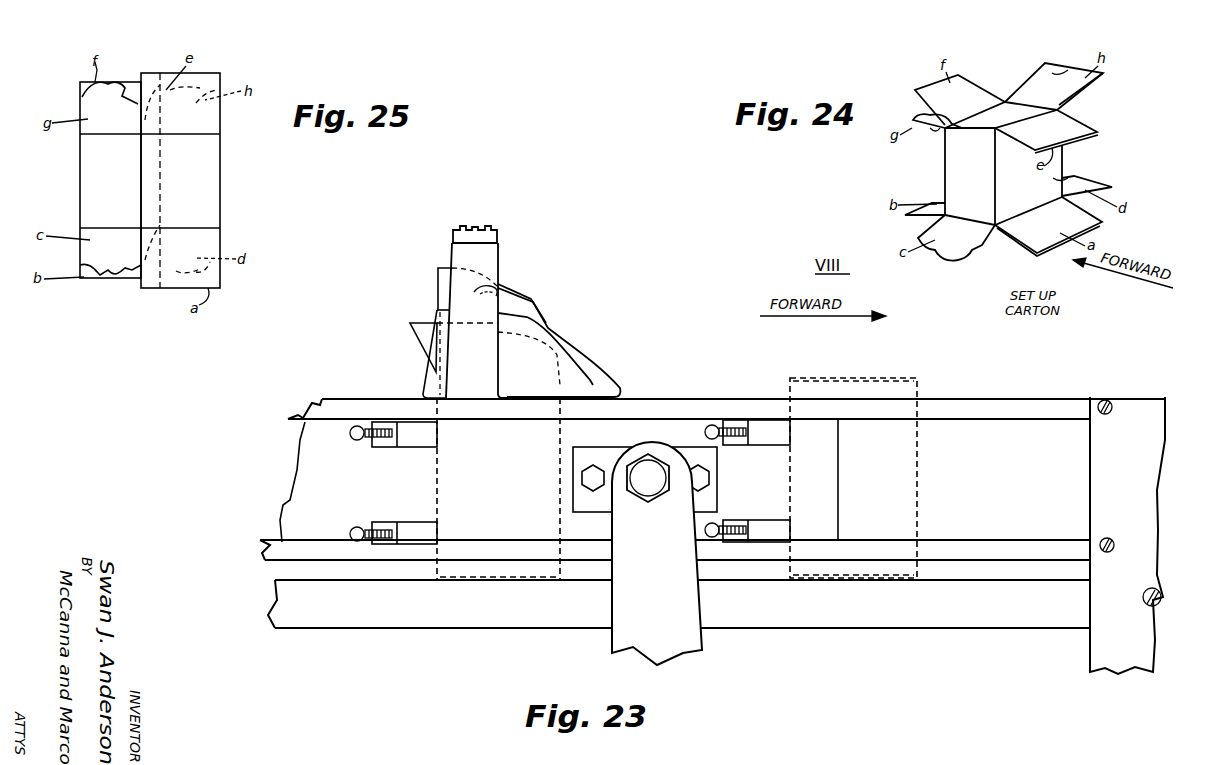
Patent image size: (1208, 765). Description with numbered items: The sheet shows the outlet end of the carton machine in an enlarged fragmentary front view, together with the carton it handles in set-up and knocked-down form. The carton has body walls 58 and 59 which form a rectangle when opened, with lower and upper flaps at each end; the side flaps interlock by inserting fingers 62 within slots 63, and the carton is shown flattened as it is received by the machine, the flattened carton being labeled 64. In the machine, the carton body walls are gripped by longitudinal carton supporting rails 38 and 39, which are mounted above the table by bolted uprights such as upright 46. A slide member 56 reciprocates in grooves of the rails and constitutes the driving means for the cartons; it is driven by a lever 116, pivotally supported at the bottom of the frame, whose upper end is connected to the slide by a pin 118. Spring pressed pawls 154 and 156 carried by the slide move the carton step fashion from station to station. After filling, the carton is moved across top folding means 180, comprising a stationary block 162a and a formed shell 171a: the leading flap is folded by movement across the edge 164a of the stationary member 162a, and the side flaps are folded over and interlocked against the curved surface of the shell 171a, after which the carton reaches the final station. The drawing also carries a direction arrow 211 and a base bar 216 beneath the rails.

In FIG. 23, the longitudinal carton supporting rail 38 is at (1012, 405).
In FIG. 23, the longitudinal carton supporting rail 39 is at (1010, 548).
In FIG. 23, the bolted upright 46 is at (1137, 488).
In FIG. 23, the slide member 56 is at (810, 482).
In FIG. 25, the body wall 58 is at (180, 181).
In FIG. 24, the body wall 58 is at (1029, 184).
In FIG. 25, the body wall 59 is at (110, 181).
In FIG. 24, the body wall 59 is at (960, 176).
In FIG. 24, the finger 62 is at (934, 132).
In FIG. 24, the slot 63 is at (1060, 74).
In FIG. 25, the carton 64 is at (252, 200).
In FIG. 24, the carton 64 is at (1085, 113).
In FIG. 23, the lever 116 is at (677, 607).
In FIG. 23, the pin 118 is at (664, 553).
In FIG. 23, the pawl 154 is at (393, 483).
In FIG. 23, the pawl 156 is at (747, 481).
In FIG. 23, the stationary member 162a is at (423, 323).
In FIG. 23, the edge 164a is at (592, 385).
In FIG. 23, the formed shell 171a is at (580, 357).
In FIG. 23, the top folding means 180 is at (557, 317).
In FIG. 23, the direction arrow 211 is at (963, 577).
In FIG. 23, the base bar 216 is at (903, 610).